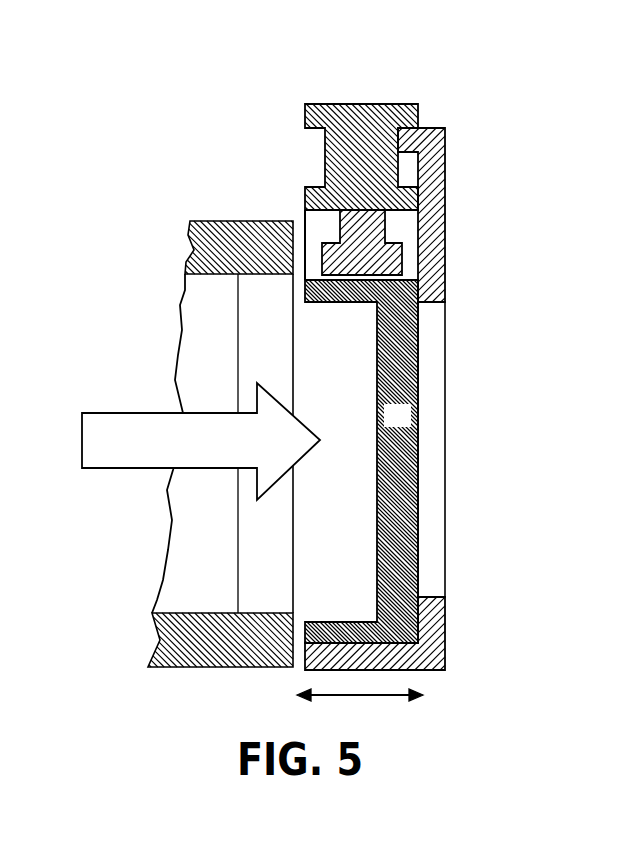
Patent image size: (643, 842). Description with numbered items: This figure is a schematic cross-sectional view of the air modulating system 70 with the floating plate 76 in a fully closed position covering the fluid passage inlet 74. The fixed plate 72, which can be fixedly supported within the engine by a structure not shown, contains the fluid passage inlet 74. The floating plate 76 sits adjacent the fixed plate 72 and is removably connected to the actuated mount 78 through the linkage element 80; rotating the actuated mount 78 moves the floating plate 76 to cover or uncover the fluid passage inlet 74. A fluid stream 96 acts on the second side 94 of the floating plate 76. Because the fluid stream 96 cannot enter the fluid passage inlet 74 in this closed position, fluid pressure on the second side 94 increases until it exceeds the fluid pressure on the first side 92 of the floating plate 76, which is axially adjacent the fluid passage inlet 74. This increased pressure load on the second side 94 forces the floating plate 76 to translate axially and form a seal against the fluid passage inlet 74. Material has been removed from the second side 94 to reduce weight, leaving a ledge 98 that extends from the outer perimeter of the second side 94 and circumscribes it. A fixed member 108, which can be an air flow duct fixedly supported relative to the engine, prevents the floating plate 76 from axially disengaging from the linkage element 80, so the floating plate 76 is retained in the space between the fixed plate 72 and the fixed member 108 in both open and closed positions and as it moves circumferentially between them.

The air modulating system 70 is at (526, 122).
The fixed plate 72 is at (446, 272).
The fluid passage inlet 74 is at (432, 458).
The floating plate 76 is at (397, 416).
The actuated mount 78 is at (345, 130).
The linkage element 80 is at (385, 233).
The first side 92 is at (418, 525).
The second side 94 is at (375, 560).
The fluid stream 96 is at (201, 441).
The ledge 98 is at (327, 622).
The fixed member 108 is at (236, 232).